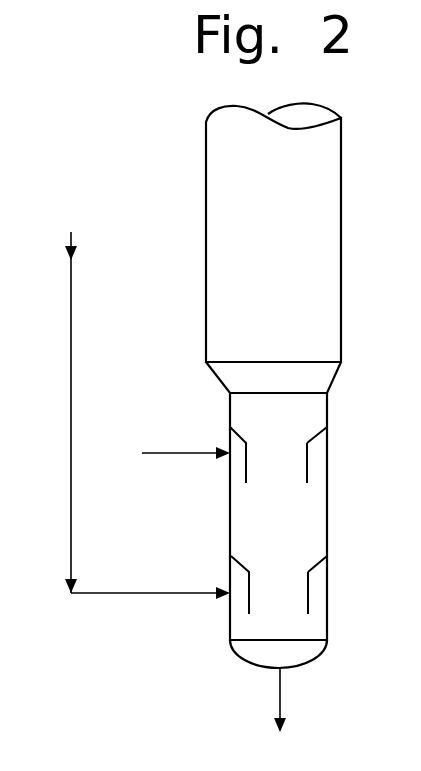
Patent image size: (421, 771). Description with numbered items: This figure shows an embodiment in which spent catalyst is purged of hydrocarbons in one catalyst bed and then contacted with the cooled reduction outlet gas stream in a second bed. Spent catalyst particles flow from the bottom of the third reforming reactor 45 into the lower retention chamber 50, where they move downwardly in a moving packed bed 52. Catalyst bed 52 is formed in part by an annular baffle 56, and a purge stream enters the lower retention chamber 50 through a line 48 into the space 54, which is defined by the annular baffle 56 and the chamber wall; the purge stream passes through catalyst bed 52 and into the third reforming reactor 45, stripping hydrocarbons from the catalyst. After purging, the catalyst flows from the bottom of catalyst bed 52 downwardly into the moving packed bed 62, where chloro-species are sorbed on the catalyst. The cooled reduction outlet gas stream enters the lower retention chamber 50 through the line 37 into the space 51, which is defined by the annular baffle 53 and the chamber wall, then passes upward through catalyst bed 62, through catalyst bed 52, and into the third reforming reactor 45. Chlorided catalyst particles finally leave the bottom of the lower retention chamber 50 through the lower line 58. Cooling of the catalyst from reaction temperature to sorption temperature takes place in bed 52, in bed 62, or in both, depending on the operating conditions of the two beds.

The line 37 is at (71, 320).
The third reforming reactor 45 is at (297, 251).
The line 48 is at (188, 455).
The lower retention chamber 50 is at (230, 412).
The space 51 is at (318, 573).
The moving packed bed 52 is at (299, 473).
The annular baffle 53 is at (312, 595).
The space 54 is at (315, 446).
The annular baffle 56 is at (312, 458).
The lower line 58 is at (280, 692).
The moving packed bed 62 is at (299, 602).